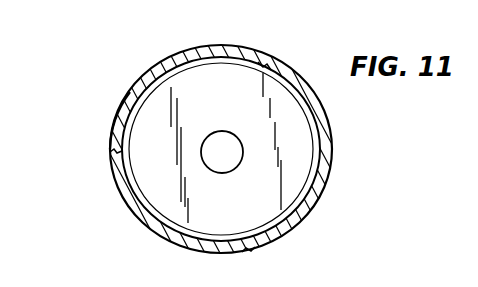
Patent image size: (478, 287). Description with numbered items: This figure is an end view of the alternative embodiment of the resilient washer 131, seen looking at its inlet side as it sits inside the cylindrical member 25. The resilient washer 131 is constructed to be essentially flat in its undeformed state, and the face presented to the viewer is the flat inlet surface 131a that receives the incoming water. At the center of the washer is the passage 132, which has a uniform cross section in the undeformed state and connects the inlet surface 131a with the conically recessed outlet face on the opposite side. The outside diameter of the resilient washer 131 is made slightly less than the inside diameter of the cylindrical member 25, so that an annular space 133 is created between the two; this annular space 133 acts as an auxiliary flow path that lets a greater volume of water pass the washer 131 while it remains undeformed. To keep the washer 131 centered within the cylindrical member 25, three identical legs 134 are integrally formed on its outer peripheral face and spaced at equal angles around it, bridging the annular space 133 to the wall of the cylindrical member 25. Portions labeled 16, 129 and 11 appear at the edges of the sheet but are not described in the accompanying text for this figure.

The annular space 133 is at (168, 76).
The cylindrical member 25 is at (124, 110).
The resilient washer 131 is at (142, 188).
The flat inlet surface 131a is at (283, 156).
The passage 132 is at (234, 171).
The legs 134 is at (125, 155).
The housing 16 is at (134, 281).
The seal member 129 is at (330, 280).
The assembly 11 is at (1, 270).